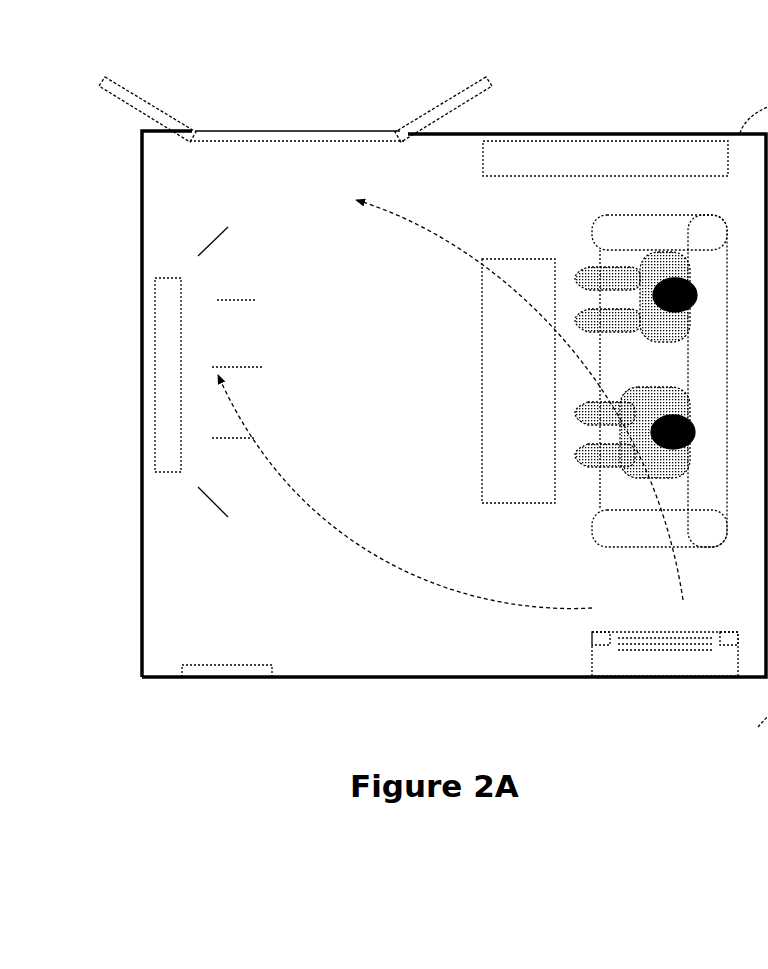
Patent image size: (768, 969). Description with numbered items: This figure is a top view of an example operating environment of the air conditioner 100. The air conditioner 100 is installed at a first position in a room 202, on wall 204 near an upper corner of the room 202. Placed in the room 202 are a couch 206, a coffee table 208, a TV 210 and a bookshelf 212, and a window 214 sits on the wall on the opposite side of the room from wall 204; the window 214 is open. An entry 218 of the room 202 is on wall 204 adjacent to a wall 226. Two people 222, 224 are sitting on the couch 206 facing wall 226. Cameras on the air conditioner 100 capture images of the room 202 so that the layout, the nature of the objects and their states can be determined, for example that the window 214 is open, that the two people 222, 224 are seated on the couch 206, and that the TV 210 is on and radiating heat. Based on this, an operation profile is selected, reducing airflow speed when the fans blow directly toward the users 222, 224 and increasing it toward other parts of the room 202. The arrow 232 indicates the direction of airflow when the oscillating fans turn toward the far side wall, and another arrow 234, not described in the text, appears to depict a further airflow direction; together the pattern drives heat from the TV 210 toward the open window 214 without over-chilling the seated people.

The air conditioner 100 is at (655, 678).
The room 202 is at (442, 384).
The wall 204 is at (525, 678).
The couch 206 is at (590, 548).
The coffee table 208 is at (507, 504).
The TV 210 is at (180, 473).
The bookshelf 212 is at (512, 177).
The window 214 is at (285, 130).
The entry 218 is at (222, 678).
The person 222 is at (640, 342).
The person 224 is at (660, 478).
The wall 226 is at (140, 662).
The arrow 232 is at (350, 545).
The second path 234 is at (407, 214).